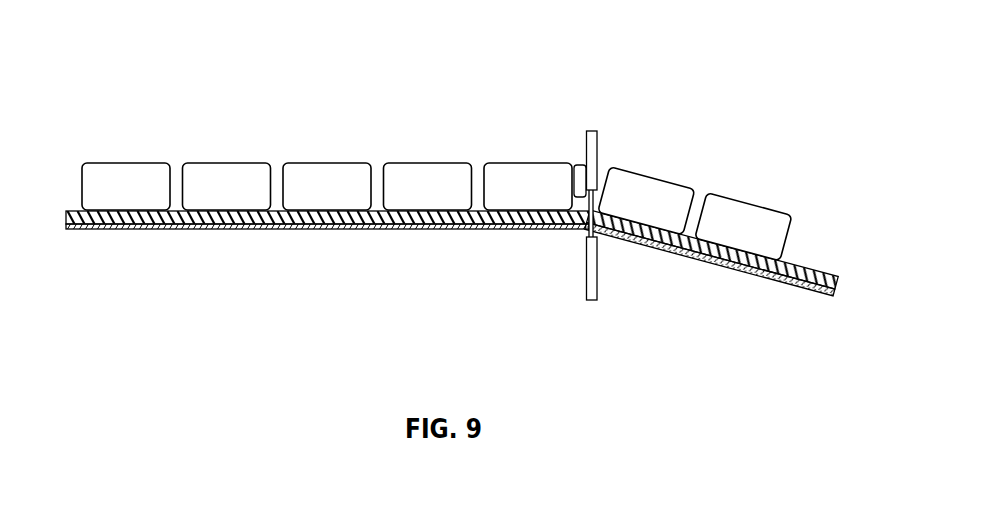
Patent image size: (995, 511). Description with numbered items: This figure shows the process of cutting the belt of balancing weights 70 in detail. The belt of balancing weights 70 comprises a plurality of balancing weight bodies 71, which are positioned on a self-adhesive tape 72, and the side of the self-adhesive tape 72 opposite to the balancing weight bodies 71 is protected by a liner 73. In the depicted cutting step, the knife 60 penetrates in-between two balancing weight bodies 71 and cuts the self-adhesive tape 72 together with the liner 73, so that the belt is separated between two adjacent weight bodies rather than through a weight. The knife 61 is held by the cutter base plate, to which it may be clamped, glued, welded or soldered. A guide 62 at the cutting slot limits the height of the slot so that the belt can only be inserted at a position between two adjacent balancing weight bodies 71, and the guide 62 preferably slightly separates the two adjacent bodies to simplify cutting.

The belt of balancing weights 70 is at (95, 108).
The balancing weight bodies 71 is at (127, 173).
The self-adhesive tape 72 is at (820, 272).
The liner 73 is at (810, 292).
The knife 60 is at (597, 277).
The knife 61 is at (600, 198).
The guide 62 is at (580, 187).